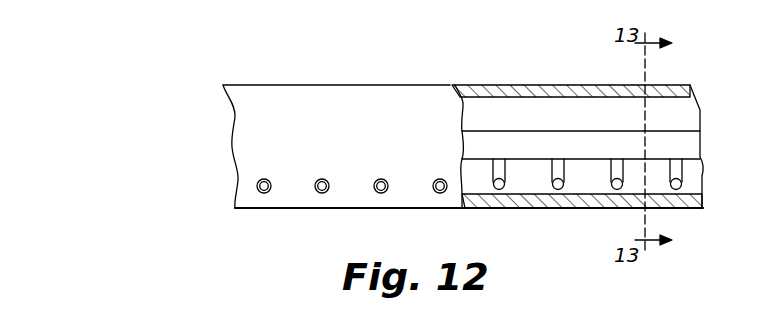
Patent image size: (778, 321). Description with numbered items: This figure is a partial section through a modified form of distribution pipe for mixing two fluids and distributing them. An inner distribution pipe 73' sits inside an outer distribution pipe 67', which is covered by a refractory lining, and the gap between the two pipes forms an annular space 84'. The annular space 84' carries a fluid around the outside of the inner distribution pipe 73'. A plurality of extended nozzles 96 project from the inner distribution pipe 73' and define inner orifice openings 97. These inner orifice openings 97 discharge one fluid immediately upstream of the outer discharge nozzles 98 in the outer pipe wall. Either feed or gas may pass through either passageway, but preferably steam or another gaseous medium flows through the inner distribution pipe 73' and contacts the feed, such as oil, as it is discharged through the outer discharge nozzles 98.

The annular space 84' is at (571, 82).
The outer distribution pipe 67' is at (694, 129).
The inner distribution pipe 73' is at (606, 133).
The extended nozzles 96 is at (684, 170).
The inner orifice openings 97 is at (680, 188).
The outer discharge nozzles 98 is at (434, 193).